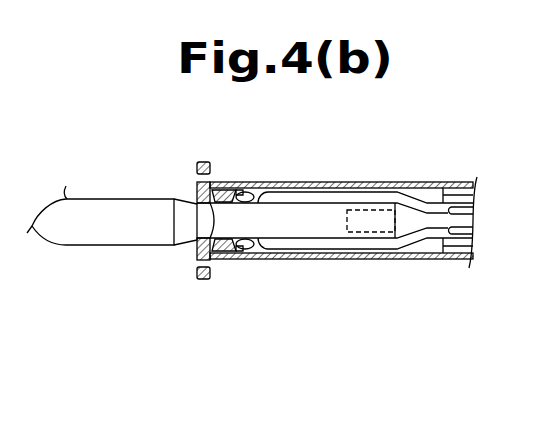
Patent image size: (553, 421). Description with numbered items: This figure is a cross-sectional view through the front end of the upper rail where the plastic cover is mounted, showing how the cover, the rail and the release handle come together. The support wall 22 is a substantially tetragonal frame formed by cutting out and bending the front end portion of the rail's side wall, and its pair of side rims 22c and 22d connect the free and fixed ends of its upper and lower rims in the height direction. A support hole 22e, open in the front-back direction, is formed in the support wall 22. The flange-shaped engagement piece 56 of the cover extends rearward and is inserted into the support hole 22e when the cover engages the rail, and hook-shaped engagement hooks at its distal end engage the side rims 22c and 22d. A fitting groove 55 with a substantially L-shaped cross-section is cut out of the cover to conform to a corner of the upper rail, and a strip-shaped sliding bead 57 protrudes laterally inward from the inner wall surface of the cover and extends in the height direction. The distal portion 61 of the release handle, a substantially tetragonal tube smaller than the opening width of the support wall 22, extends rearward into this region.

The support wall 22 is at (248, 252).
The side rim 22c is at (247, 196).
The side rim 22d is at (240, 254).
The support hole 22e is at (250, 196).
The fitting groove 55 is at (212, 268).
The engagement piece 56 is at (229, 192).
The sliding bead 57 is at (192, 219).
The distal portion 61 is at (104, 197).